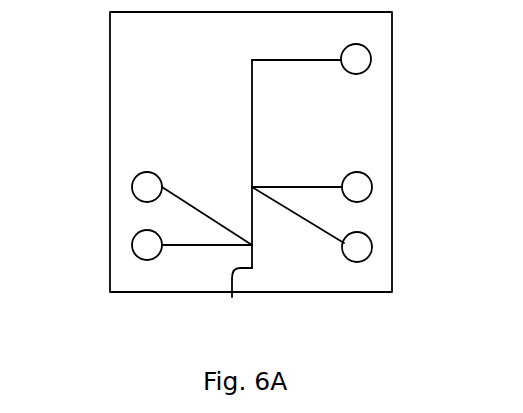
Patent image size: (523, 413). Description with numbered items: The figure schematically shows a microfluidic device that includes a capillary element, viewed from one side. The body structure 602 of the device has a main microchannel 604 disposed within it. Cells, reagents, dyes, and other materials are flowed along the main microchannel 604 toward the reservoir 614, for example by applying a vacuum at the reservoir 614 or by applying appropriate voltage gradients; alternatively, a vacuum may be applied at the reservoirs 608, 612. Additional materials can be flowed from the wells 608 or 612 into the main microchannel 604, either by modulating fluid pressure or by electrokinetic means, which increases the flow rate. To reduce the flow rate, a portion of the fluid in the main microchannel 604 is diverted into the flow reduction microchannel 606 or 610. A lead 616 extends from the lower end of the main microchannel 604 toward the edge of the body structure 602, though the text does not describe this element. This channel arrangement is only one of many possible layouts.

The body structure 602 is at (110, 60).
The main microchannel 604 is at (250, 70).
The flow reduction microchannel 606 is at (131, 187).
The reservoir 608 is at (131, 246).
The flow reduction microchannel 610 is at (372, 247).
The reservoir 612 is at (372, 187).
The reservoir 614 is at (371, 59).
The connection to external path 616 is at (232, 299).